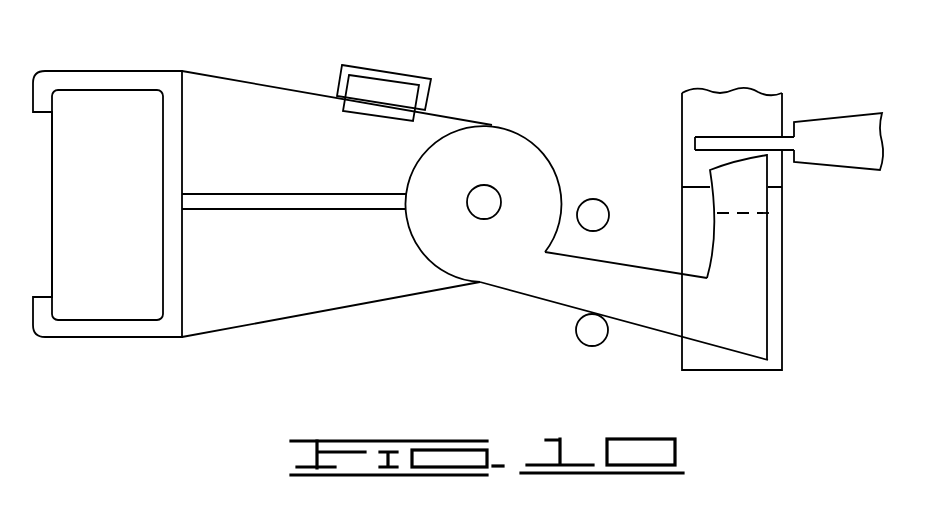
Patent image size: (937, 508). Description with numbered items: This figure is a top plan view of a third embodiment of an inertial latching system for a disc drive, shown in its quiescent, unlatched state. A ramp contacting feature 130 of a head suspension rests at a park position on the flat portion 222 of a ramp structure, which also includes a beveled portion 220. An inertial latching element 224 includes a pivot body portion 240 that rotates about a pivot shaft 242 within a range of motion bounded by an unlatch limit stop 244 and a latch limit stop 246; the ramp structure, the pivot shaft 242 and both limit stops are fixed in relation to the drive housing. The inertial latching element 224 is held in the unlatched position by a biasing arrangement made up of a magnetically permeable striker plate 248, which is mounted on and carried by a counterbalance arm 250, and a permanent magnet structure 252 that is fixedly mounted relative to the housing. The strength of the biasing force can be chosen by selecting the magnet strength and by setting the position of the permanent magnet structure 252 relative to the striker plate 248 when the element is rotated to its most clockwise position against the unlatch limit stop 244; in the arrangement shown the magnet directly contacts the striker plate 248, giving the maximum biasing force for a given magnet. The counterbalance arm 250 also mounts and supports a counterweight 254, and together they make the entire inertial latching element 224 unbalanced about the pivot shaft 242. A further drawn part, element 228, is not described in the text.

The ramp contacting feature 130 is at (743, 143).
The beveled portion 220 is at (710, 360).
The flat portion 222 is at (705, 112).
The inertial latching element 224 is at (347, 338).
The guide sheet 228 is at (748, 190).
The pivot body portion 240 is at (485, 157).
The pivot shaft 242 is at (485, 207).
The unlatch limit stop 244 is at (592, 347).
The latch limit stop 246 is at (592, 199).
The striker plate 248 is at (377, 113).
The counterbalance arm 250 is at (254, 106).
The permanent magnet structure 252 is at (385, 92).
The counterweight 254 is at (115, 250).